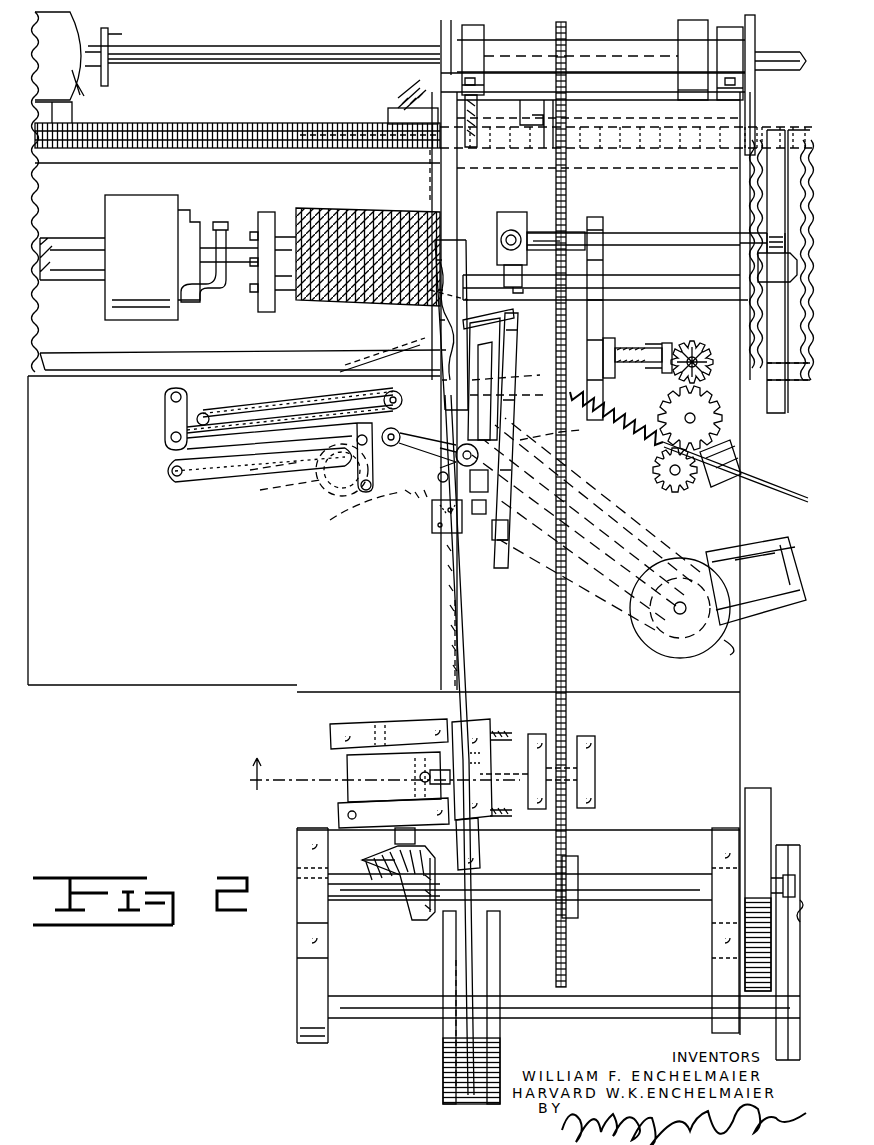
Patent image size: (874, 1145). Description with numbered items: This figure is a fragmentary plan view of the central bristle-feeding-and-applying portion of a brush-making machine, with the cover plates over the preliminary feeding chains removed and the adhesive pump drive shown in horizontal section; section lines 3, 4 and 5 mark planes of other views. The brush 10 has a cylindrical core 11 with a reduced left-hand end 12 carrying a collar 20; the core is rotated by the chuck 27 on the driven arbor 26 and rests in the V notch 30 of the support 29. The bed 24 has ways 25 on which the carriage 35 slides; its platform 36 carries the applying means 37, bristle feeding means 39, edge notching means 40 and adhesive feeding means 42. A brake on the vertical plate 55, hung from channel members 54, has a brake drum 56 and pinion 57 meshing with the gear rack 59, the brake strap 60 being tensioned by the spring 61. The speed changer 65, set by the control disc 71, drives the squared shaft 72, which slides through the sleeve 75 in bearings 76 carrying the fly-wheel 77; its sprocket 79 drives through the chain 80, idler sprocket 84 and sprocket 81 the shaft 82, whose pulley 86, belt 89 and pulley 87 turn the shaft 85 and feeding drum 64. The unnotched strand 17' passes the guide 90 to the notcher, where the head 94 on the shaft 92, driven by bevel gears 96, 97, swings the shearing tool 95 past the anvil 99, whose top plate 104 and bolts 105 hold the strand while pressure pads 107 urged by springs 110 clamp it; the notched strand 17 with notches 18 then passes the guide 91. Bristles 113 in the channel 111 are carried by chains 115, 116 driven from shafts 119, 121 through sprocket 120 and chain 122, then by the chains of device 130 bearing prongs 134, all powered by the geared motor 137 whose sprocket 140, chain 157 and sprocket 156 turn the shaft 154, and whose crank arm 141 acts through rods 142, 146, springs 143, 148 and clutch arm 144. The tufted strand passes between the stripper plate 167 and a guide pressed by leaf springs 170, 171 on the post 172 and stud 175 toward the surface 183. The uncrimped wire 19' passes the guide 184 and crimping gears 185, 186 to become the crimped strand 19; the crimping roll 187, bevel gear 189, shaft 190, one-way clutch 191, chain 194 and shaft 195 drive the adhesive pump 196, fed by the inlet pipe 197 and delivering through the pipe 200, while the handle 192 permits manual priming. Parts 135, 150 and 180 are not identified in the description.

The section line 3- 3 is at (511, 770).
The section line 4- 4 is at (546, 380).
The section line 5-5 / pivot bar 5 is at (510, 350).
The brush 10 is at (341, 210).
The core 11 is at (668, 250).
The reduced diameter left-hand end 12 is at (243, 270).
The first flat strand 17 is at (474, 645).
The unnotched first strand 17' is at (498, 1023).
The notch 18 is at (448, 596).
The second strand 19 is at (616, 418).
The uncrimped strand 19' is at (735, 483).
The collar 20 is at (287, 298).
The main bed 24 is at (322, 140).
The longitudinal ways 25 is at (98, 152).
The driven arbor 26 is at (65, 265).
The chuck 27 is at (155, 208).
The support 29 is at (788, 132).
The V central notch 30 is at (760, 250).
The carriage 35 is at (745, 119).
The upper platform 36 is at (160, 688).
The means for applying bristles, strands, and adhesive 37 is at (470, 200).
The bristle feeding means 39 is at (306, 516).
The edge notching means 40 is at (466, 716).
The adhesive feeding means 42 is at (577, 220).
The channel members 54 is at (450, 32).
The vertical plate 55 is at (655, 98).
The brake drum 56 is at (498, 108).
The pinion 57 is at (425, 165).
The gear rack 59 is at (200, 125).
The brake strap 60 is at (405, 118).
The adjustably tensioned spring 61 is at (404, 98).
The feeding drum 64 is at (500, 1062).
The variable speed changer 65 is at (78, 32).
The control disc 71 is at (112, 33).
The squared shaft 72 is at (232, 55).
The sleeve member 75 is at (626, 55).
The aligned bearings 76 is at (486, 40).
The fly-wheel 77 is at (684, 38).
The sprocket 79 is at (566, 36).
The chain 80 is at (570, 137).
The sprocket 81 is at (556, 926).
The driven shaft 82 is at (650, 888).
The idler sprocket 84 is at (577, 742).
The front shaft 85 is at (630, 1000).
The pulley 86 is at (790, 876).
The pulley 87 is at (795, 1040).
The belt 89 is at (778, 1020).
The first guiding means 90 is at (480, 850).
The further guide 91 is at (440, 550).
The short shaft 92 is at (350, 770).
The enlarged head 94 is at (392, 742).
The shearing tool 95 is at (420, 778).
The bevel gear 96 is at (422, 918).
The bevel gear 97 is at (368, 888).
The stationary anvil 99 is at (522, 742).
The top plate 104 is at (474, 740).
The bolts 105 is at (482, 712).
The channel pressure pads 107 is at (370, 757).
The coil compression spring 110 is at (515, 712).
The preliminary bristle receiving channel 111 is at (161, 460).
The bristles 113 is at (340, 392).
The bristle feeding chain 115 is at (256, 408).
The bristle feeding chain 116 is at (226, 480).
The shaft 119 is at (204, 404).
The driving sprocket 120 is at (342, 495).
The vertical shaft 121 is at (350, 510).
The chain 122 is at (295, 480).
The bristle feeding device 130 is at (440, 465).
The bristle engaging prongs 134 is at (410, 458).
The pin 135 is at (432, 515).
The geared motor 137 is at (732, 652).
The sprocket 140 is at (668, 648).
The crank arm 141 is at (735, 637).
The second connecting rod 142 is at (582, 585).
The second compression spring 143 is at (530, 558).
The second clutch arm 144 is at (432, 532).
The connecting rod 146 is at (632, 518).
The first compression spring 148 is at (600, 442).
The cable 150 is at (386, 520).
The vertical shaft 154 is at (430, 336).
The sprocket 156 is at (398, 356).
The chain 157 is at (672, 546).
The stripper plate 167 is at (422, 322).
The leaf spring 170 is at (512, 482).
The leaf spring 171 is at (536, 392).
The vertical post 172 is at (512, 508).
The stud 175 is at (510, 348).
The block 180 is at (504, 270).
The horizontal surface 183 is at (504, 240).
The strand guiding means 184 is at (720, 476).
The crimping gear 185 is at (675, 490).
The crimping gear 186 is at (724, 430).
The crimping roll 187 is at (712, 350).
The bevel gear 189 is at (692, 341).
The shaft 190 is at (665, 352).
The one-way clutch 191 is at (640, 342).
The handle 192 is at (604, 338).
The chain 194 is at (596, 282).
The pump shaft 195 is at (592, 218).
The adhesive delivering pump 196 is at (533, 225).
The inlet pipe 197 is at (510, 212).
The pipe 200 is at (486, 294).